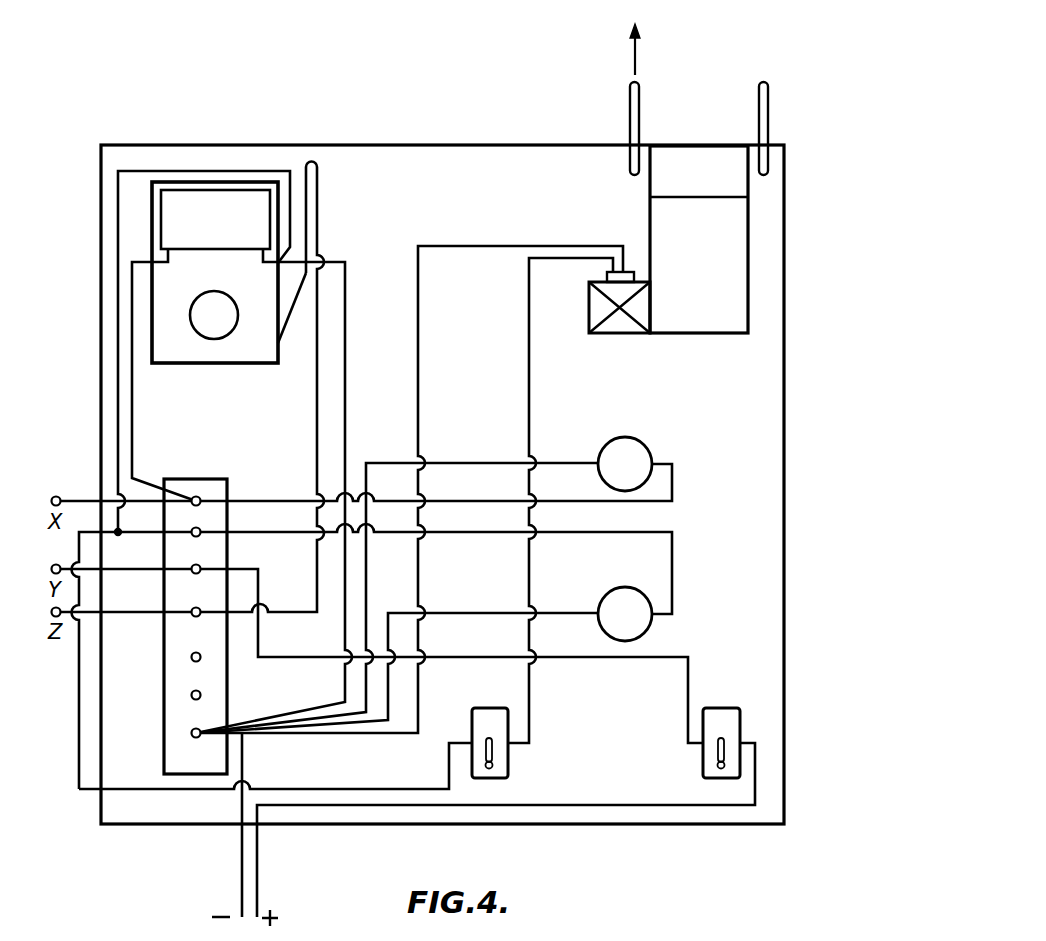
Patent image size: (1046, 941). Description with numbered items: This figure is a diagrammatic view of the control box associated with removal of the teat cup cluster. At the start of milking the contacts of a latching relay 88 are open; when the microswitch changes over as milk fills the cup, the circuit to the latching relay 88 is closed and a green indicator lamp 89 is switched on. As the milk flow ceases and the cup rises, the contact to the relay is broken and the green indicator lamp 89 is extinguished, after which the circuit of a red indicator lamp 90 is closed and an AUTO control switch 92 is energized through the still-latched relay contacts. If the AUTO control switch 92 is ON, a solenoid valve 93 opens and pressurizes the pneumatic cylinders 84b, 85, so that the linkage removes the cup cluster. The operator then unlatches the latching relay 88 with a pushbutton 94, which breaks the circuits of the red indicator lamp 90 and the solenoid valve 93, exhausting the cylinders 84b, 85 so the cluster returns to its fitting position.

The latching relay 88 is at (249, 342).
The pushbutton 94 is at (212, 330).
The green indicator lamp 89 is at (616, 450).
The red indicator lamp 90 is at (614, 600).
The AUTO control switch 92 is at (488, 716).
The solenoid valve 93 is at (660, 238).
The pneumatic cylinder 84b is at (709, 99).
The pneumatic cylinder 85 is at (763, 128).